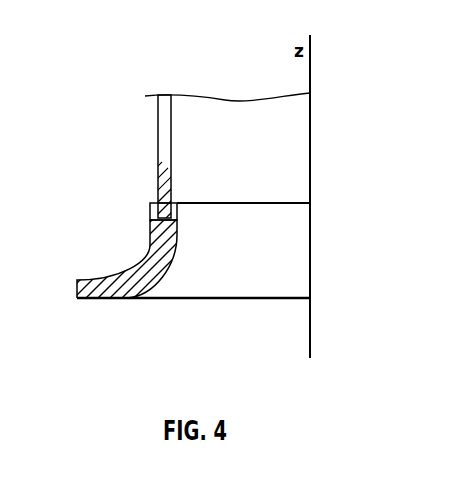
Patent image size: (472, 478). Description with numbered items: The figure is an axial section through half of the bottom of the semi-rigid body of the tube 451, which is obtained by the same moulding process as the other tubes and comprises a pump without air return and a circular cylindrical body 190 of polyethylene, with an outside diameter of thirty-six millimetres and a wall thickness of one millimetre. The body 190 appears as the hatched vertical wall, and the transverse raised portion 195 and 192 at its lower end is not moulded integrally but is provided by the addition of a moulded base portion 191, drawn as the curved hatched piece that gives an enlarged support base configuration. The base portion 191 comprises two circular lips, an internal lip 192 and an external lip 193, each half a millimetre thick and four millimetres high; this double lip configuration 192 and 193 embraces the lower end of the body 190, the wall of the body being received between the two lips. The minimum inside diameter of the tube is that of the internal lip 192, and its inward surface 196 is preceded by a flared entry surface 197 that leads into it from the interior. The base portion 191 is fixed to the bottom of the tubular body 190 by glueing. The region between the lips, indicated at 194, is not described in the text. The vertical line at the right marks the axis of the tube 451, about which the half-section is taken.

The circular cylindrical body 190 is at (163, 127).
The tube 451 is at (156, 143).
The external lip 193 is at (148, 209).
The moulded base portion 191 is at (123, 261).
The internal lip 192 is at (169, 205).
The gap 194 is at (176, 208).
The inward surface 196 is at (180, 223).
The transverse raised portion 195 is at (177, 231).
The flared entry surface 197 is at (171, 267).